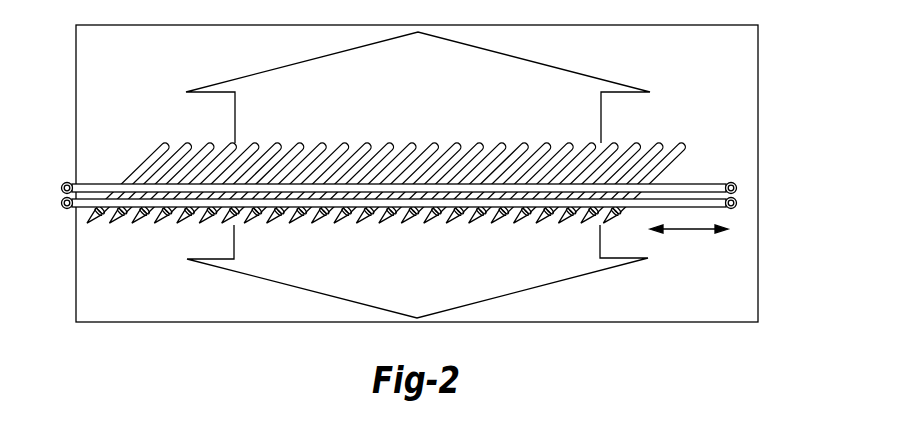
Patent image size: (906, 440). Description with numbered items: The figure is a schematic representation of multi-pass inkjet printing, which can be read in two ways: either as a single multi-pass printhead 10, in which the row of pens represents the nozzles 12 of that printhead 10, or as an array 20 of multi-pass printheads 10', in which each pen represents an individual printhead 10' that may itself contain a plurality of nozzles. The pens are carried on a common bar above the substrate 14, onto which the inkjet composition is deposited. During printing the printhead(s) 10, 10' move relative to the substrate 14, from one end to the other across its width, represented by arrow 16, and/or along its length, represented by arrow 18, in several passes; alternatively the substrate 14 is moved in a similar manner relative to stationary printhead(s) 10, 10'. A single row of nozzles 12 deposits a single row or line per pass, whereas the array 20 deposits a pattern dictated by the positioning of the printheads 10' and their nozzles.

The substrate 14 is at (76, 93).
The nozzles 12 is at (385, 188).
The printheads 10' is at (385, 188).
The multi-pass printhead 10 is at (405, 186).
The array of multi-pass printheads 20 is at (701, 150).
The arrow 18 is at (601, 120).
The arrow 16 is at (688, 231).